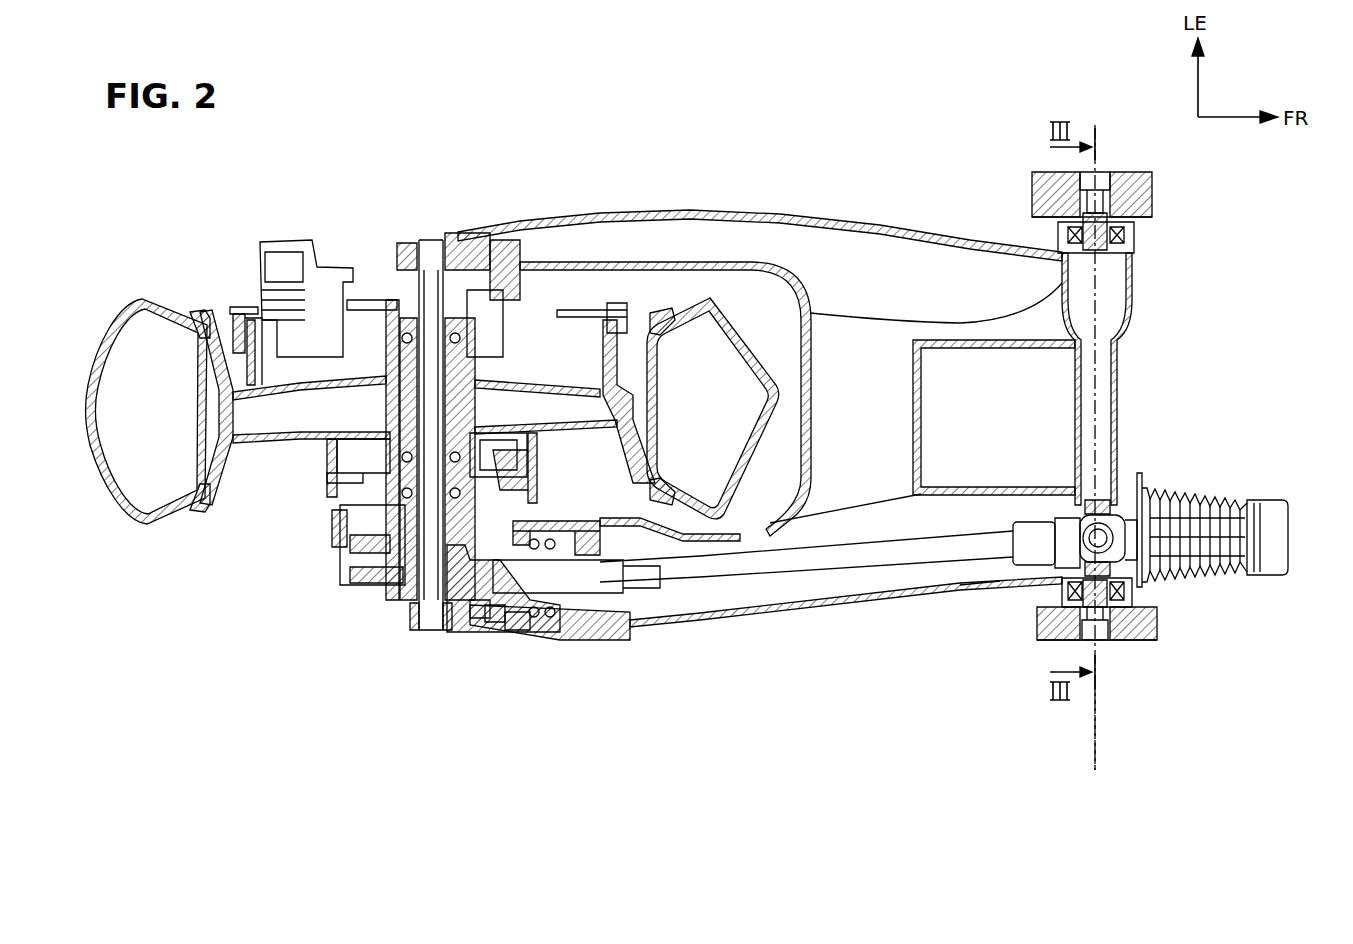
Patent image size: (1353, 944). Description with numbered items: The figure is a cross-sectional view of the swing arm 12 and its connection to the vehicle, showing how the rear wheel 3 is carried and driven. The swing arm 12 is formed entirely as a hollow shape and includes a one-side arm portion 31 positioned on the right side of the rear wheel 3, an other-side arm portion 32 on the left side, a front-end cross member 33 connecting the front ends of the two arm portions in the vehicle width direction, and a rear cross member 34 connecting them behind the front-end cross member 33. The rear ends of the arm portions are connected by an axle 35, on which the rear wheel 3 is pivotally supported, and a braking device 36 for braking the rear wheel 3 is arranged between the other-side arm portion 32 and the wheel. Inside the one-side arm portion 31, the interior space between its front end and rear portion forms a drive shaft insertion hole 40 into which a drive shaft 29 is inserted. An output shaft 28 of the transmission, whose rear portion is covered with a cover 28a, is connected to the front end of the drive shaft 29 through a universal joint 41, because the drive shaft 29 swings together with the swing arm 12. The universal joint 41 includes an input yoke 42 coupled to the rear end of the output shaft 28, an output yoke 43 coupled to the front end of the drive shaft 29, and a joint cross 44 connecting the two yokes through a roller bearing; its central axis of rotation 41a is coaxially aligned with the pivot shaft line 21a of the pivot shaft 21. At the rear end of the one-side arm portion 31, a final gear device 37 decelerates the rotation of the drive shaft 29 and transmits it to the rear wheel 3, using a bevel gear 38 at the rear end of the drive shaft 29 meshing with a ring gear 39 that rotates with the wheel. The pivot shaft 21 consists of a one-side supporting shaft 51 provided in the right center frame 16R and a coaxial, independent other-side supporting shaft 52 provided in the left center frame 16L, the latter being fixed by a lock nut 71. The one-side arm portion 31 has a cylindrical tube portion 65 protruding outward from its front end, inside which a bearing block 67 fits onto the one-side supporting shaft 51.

The rear wheel 3 is at (197, 516).
The swing arm 12 is at (848, 606).
The left center frame 16L is at (1040, 170).
The right center frame 16R is at (1050, 645).
The pivot shaft 21 is at (1108, 648).
The pivot shaft line 21a is at (1065, 464).
The central axis of rotation 41a is at (1103, 746).
The output shaft 28 is at (1230, 578).
The cover 28a is at (1225, 502).
The drive shaft 29 is at (872, 570).
The one-side arm portion 31 is at (786, 612).
The other-side arm portion 32 is at (728, 210).
The front-end cross member 33 is at (1120, 397).
The rear cross member 34 is at (800, 357).
The axle 35 is at (430, 612).
The braking device 36 is at (340, 267).
The final gear device 37 is at (492, 628).
The bevel gear 38 is at (507, 632).
The ring gear 39 is at (473, 625).
The drive shaft insertion hole 40 is at (980, 580).
The universal joint 41 is at (1063, 506).
The input yoke 42 is at (1118, 472).
The output yoke 43 is at (1060, 508).
The joint cross 44 is at (1098, 512).
The one-side supporting shaft 51 is at (1140, 645).
The other-side supporting shaft 52 is at (1128, 176).
The tube portion 65 is at (1060, 236).
The bearing block 67 is at (1120, 233).
The lock nut 71 is at (1094, 172).